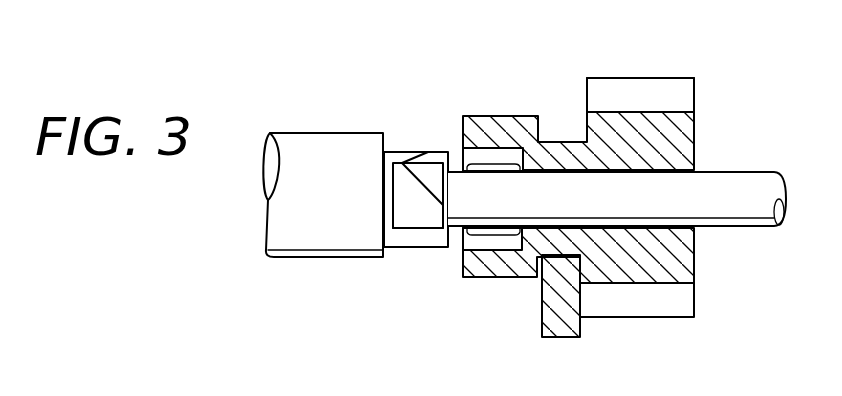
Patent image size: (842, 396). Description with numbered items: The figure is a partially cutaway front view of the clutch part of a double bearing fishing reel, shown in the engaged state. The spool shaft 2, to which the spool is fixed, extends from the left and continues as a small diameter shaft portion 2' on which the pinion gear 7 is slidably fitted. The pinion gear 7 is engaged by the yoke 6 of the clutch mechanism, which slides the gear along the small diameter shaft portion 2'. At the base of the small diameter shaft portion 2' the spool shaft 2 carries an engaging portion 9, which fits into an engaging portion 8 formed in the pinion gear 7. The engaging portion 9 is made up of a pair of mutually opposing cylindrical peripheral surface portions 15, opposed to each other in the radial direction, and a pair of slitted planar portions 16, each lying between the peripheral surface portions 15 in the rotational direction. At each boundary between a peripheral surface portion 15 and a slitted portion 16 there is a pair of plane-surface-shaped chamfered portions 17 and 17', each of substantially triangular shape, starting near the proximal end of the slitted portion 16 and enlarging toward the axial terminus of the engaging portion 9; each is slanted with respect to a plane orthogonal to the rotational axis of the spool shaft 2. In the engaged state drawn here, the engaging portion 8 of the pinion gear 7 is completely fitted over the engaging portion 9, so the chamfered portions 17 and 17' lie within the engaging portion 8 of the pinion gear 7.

The spool shaft 2 is at (323, 145).
The small diameter shaft portion 2' is at (617, 247).
The cylindrical peripheral surface portion 15 is at (399, 160).
The engaging portion 9 is at (412, 237).
The slitted planar portion 16 is at (403, 217).
The chamfered portion 17 is at (431, 101).
The chamfered portion 17' is at (434, 255).
The pinion gear 7 is at (605, 90).
The engaging portion 8 is at (493, 240).
The yoke 6 is at (580, 328).